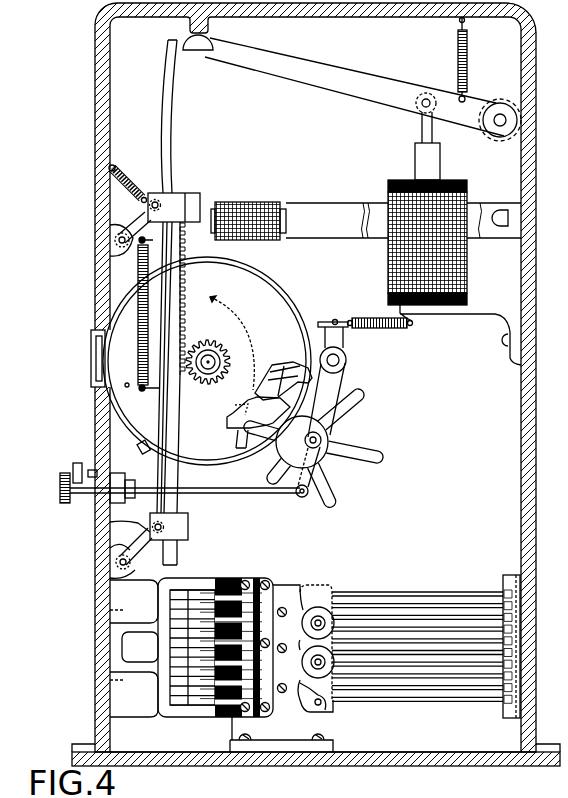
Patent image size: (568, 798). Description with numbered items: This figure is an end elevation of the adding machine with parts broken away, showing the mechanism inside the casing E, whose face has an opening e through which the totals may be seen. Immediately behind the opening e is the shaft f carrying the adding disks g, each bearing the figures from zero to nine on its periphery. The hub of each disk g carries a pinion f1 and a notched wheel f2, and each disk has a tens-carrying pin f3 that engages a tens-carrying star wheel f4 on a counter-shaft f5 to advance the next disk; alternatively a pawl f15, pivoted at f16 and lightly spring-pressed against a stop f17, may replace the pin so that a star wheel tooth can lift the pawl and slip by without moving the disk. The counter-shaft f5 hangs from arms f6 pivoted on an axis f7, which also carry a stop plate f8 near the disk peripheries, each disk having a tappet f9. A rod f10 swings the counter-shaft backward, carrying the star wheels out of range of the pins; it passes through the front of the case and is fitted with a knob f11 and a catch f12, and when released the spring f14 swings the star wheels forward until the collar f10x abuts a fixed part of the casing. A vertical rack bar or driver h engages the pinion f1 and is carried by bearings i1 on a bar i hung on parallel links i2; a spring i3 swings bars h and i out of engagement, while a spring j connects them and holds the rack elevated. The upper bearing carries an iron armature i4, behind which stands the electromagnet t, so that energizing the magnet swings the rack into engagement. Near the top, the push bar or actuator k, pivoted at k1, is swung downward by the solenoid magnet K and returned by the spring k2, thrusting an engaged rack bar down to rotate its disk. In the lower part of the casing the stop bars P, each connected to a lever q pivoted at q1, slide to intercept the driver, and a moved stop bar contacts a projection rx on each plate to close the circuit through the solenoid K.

The casing E is at (522, 458).
The opening e is at (96, 352).
The push bar or actuator k is at (196, 50).
The pivot k1 is at (500, 113).
The spring k2 is at (466, 62).
The solenoid magnet K is at (463, 203).
The electromagnet t is at (256, 201).
The rack bar or driver h is at (173, 116).
The bar i is at (157, 452).
The bearing i1 is at (181, 200).
The parallel link i2 is at (136, 230).
The spring i3 is at (128, 183).
The iron armature i4 is at (200, 203).
The spring j is at (140, 262).
The adding disk or wheel g is at (271, 279).
The shaft f is at (205, 382).
The pinion f1 is at (205, 344).
The notched wheel f2 is at (244, 455).
The tens-carrying pin f3 is at (131, 397).
The tens-carrying star wheel f4 is at (313, 448).
The counter-shaft f5 is at (321, 441).
The arm f6 is at (338, 384).
The axis f7 is at (340, 360).
The stop plate f8 is at (322, 318).
The peripheral pin or tappet f9 is at (139, 448).
The rod f10 is at (227, 493).
The collar f10x is at (110, 522).
The knob f11 is at (97, 502).
The catch f12 is at (76, 464).
The spring f14 is at (380, 332).
The pawl f15 is at (289, 372).
The pivot f16 is at (245, 382).
The stop f17 is at (260, 367).
The stop bar P is at (175, 703).
The projection rx is at (207, 703).
The lever q is at (365, 592).
The pivot q1 is at (492, 582).